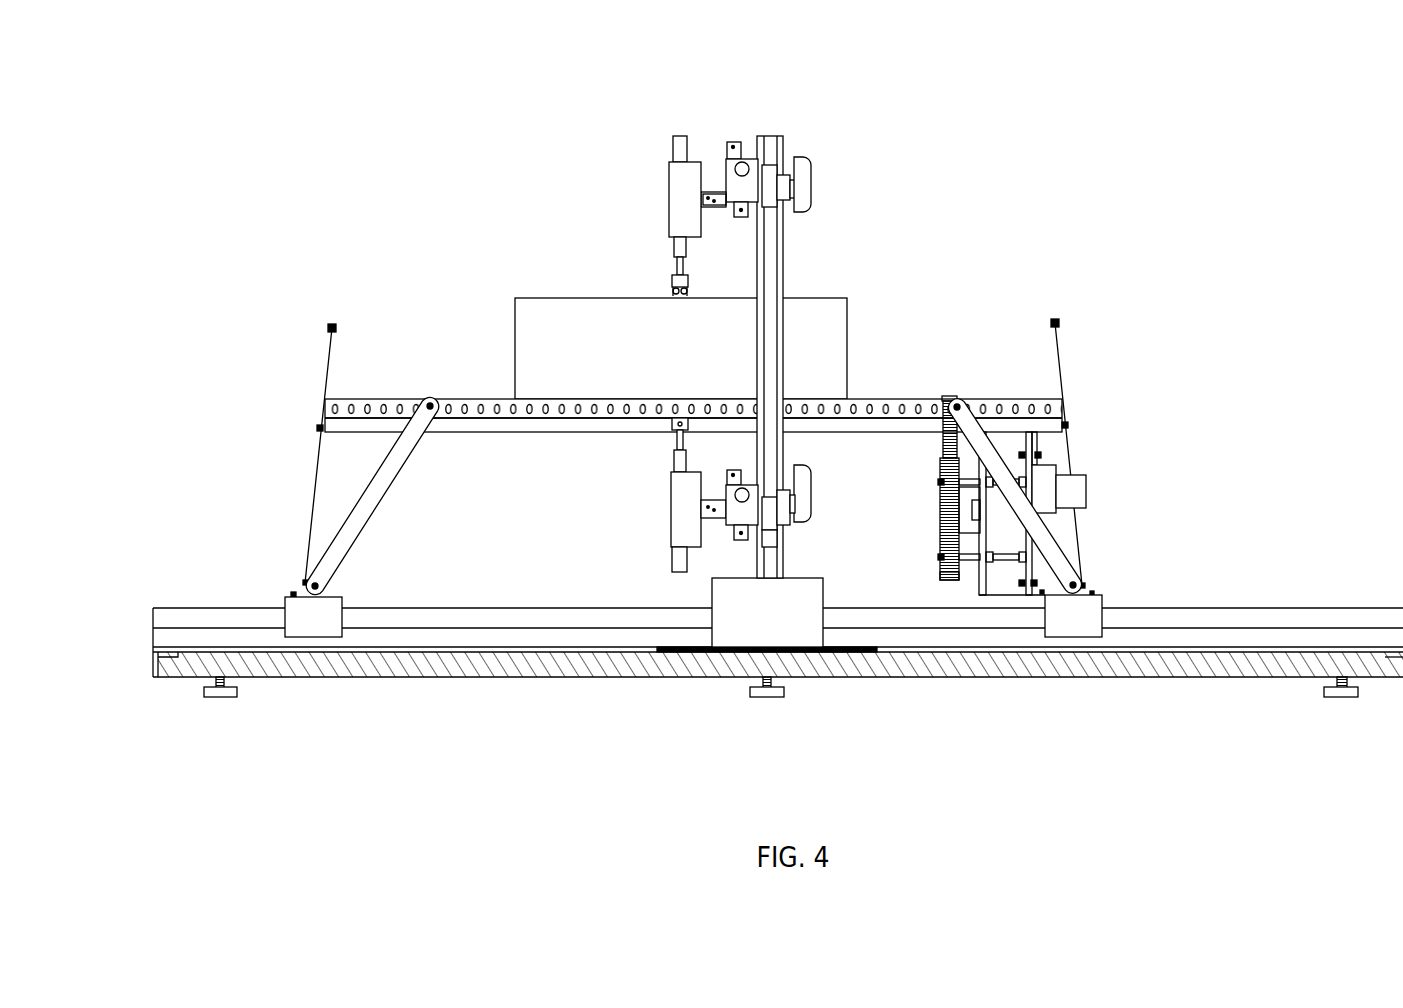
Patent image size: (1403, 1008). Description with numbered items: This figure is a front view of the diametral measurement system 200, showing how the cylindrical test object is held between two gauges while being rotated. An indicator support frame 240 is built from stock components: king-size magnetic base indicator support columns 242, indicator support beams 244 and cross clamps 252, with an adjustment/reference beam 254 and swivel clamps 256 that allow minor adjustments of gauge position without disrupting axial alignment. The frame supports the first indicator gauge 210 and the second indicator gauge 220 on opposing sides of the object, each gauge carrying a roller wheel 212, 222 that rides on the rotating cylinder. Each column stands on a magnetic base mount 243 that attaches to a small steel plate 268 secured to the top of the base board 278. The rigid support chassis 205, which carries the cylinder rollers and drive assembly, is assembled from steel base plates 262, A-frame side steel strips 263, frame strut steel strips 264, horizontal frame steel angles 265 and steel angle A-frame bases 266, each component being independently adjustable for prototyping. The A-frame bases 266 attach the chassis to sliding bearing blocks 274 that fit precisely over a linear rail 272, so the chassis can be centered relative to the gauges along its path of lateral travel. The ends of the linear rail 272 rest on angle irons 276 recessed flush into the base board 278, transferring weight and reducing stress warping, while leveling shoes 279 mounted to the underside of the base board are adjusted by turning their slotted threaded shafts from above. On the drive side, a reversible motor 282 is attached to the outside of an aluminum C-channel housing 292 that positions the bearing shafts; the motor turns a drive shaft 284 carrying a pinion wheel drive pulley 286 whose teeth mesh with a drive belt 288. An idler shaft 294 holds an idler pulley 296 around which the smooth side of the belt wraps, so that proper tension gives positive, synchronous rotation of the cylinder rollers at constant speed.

The diametral measurement system 200 is at (1120, 74).
The support chassis 205 is at (222, 391).
The first indicator gauge 210 is at (683, 198).
The roller wheel 212 is at (677, 290).
The second indicator gauge 220 is at (677, 518).
The roller wheel 222 is at (672, 423).
The indicator support frame 240 is at (801, 285).
The magnetic base indicator support column 242 is at (781, 268).
The magnetic base mount 243 is at (740, 628).
The indicator support beam 244 is at (745, 178).
The cross clamp 252 is at (801, 182).
The adjustment/reference beam 254 is at (766, 245).
The swivel clamp 256 is at (719, 185).
The steel base plate 262 is at (343, 427).
The A-frame side steel strip 263 is at (328, 361).
The frame strut steel strip 264 is at (343, 527).
The horizontal frame steel angle 265 is at (505, 396).
The steel angle A-frame base 266 is at (300, 607).
The small steel plate 268 is at (678, 648).
The linear rail 272 is at (210, 616).
The sliding bearing block 274 is at (283, 603).
The angle iron 276 is at (170, 665).
The base board 278 is at (358, 662).
The leveling shoe 279 is at (225, 697).
The motor 282 is at (1085, 490).
The drive shaft 284 is at (943, 482).
The pinion wheel drive pulley 286 is at (943, 505).
The drive belt 288 is at (950, 398).
The C-channel housing 292 is at (975, 590).
The idler shaft 294 is at (943, 555).
The idler pulley 296 is at (943, 573).